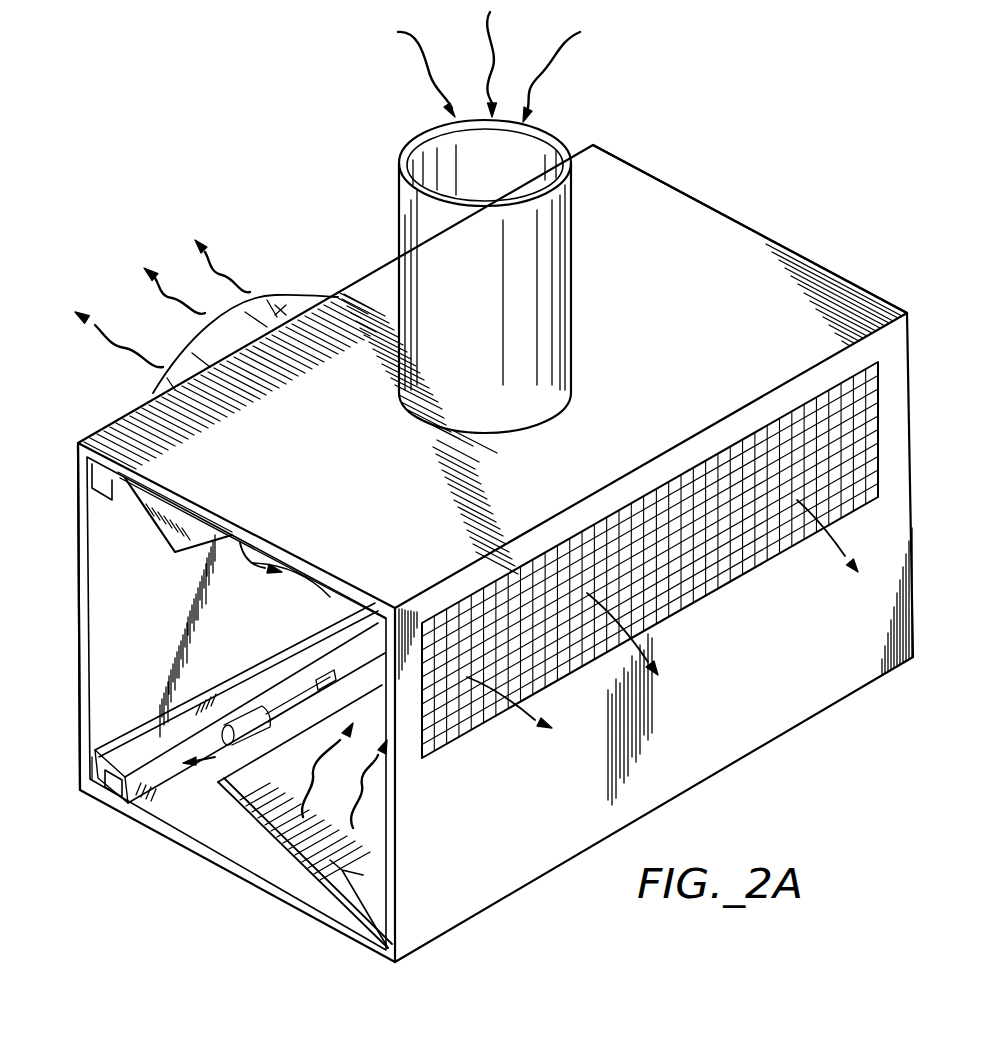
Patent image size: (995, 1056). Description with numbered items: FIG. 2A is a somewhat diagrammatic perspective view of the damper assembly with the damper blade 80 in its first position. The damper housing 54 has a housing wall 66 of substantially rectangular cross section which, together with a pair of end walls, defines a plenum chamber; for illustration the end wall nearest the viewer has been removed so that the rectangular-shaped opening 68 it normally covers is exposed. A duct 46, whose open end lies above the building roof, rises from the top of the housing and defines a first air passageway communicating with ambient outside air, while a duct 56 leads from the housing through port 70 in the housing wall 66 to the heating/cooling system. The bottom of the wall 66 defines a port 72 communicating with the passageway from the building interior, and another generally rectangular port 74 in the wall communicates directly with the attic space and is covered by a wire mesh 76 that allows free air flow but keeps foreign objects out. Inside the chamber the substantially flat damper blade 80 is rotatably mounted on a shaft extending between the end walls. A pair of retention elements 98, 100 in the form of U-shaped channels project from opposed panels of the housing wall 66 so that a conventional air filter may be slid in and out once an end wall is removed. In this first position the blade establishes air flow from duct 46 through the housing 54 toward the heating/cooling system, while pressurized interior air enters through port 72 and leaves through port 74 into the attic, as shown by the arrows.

The duct 46 is at (433, 240).
The damper housing 54 is at (823, 682).
The duct 56 is at (283, 310).
The housing wall 66 is at (660, 222).
The rectangular-shaped opening 68 is at (83, 620).
The port 70 is at (250, 565).
The port 72 is at (258, 787).
The port 74 is at (662, 560).
The wire mesh 76 is at (740, 557).
The damper blade 80 is at (177, 783).
The retention element 98 is at (108, 787).
The retention element 100 is at (103, 483).